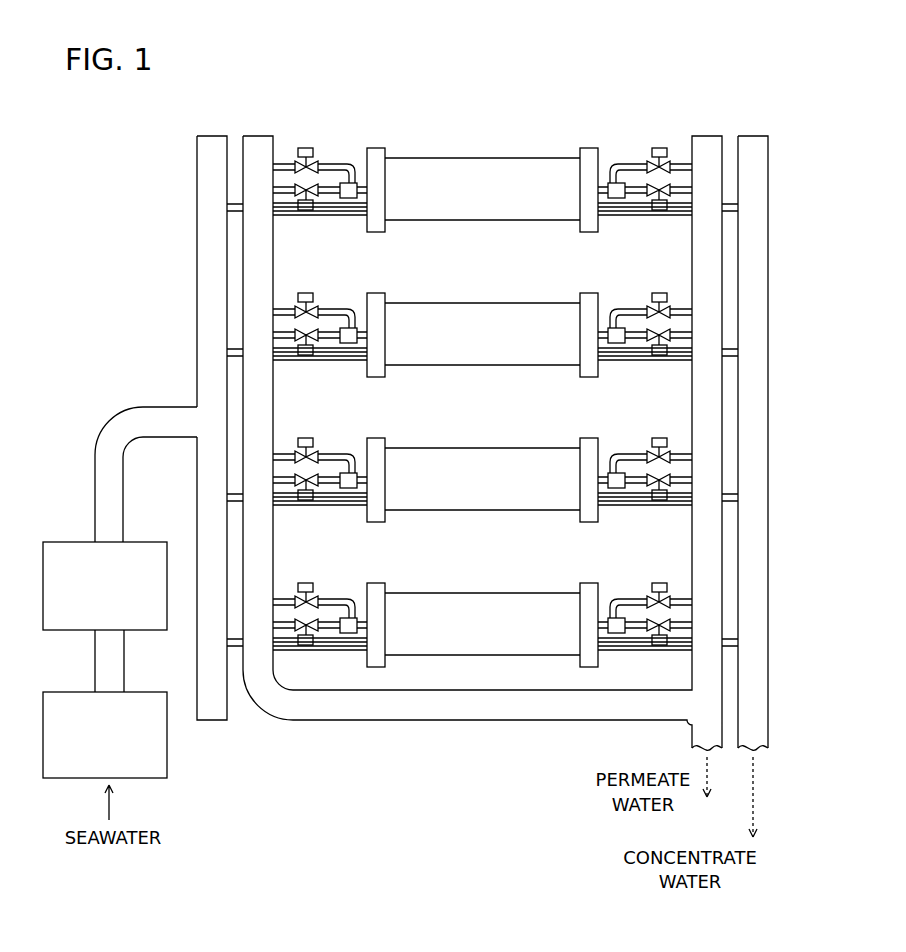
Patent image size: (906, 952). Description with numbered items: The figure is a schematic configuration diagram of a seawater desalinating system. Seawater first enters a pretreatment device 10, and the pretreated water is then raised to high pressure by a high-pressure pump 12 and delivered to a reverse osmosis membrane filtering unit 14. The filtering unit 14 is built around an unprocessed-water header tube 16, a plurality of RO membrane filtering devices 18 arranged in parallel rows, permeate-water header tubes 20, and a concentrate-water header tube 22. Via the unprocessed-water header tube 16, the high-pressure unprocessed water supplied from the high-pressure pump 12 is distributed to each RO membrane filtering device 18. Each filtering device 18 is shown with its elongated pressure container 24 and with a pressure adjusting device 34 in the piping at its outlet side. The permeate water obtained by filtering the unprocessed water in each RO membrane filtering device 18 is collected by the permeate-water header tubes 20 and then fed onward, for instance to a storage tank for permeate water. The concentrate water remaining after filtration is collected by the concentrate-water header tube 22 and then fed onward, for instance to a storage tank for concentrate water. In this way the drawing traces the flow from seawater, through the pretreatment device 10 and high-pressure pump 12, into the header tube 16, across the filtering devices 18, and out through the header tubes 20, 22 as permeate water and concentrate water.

The pretreatment device 10 is at (167, 762).
The high-pressure pump 12 is at (167, 630).
The reverse osmosis membrane filtering unit 14 is at (697, 59).
The unprocessed-water header tube 16 is at (213, 136).
The RO membrane filtering device 18 is at (604, 125).
The permeate-water header tube 20 is at (258, 136).
The concentrate-water header tube 22 is at (752, 136).
The pressure container 24 is at (507, 150).
The pressure adjusting device 34 is at (665, 131).